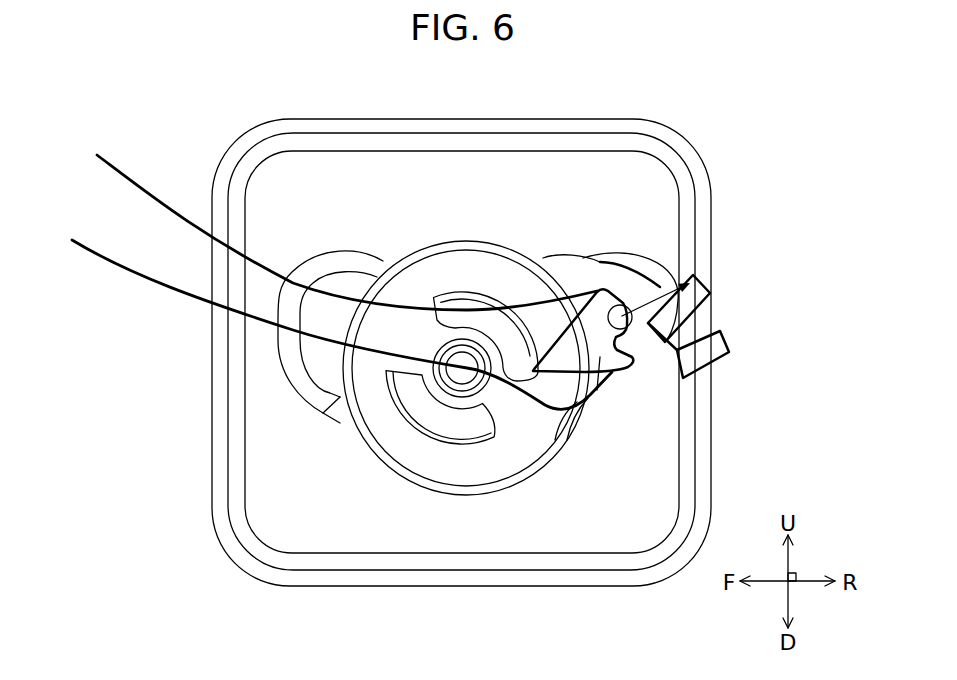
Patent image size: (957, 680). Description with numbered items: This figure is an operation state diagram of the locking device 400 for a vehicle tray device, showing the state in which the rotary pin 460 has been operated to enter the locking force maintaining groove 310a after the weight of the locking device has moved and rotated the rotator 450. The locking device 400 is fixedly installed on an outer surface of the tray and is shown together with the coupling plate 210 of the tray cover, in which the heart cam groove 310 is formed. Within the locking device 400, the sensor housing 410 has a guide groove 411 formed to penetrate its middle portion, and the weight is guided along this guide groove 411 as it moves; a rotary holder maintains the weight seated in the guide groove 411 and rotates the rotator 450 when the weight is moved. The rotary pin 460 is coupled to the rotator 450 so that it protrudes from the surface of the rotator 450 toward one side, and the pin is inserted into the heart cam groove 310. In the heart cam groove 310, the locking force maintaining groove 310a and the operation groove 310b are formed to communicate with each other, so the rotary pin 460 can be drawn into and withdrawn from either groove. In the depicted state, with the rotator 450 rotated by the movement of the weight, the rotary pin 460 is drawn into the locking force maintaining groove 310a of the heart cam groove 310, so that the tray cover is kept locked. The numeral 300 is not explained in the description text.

The locking device 400 is at (724, 135).
The sensor housing 410 is at (343, 518).
The guide groove 411 is at (343, 283).
The rotator 450 is at (512, 453).
The coupling plate 210 is at (187, 330).
The heart cam groove 310 is at (542, 310).
The locking force maintaining groove 310a is at (713, 279).
The operation groove 310b is at (720, 349).
The rotary pin 460 is at (628, 326).
The cable fixing member 300 is at (600, 362).